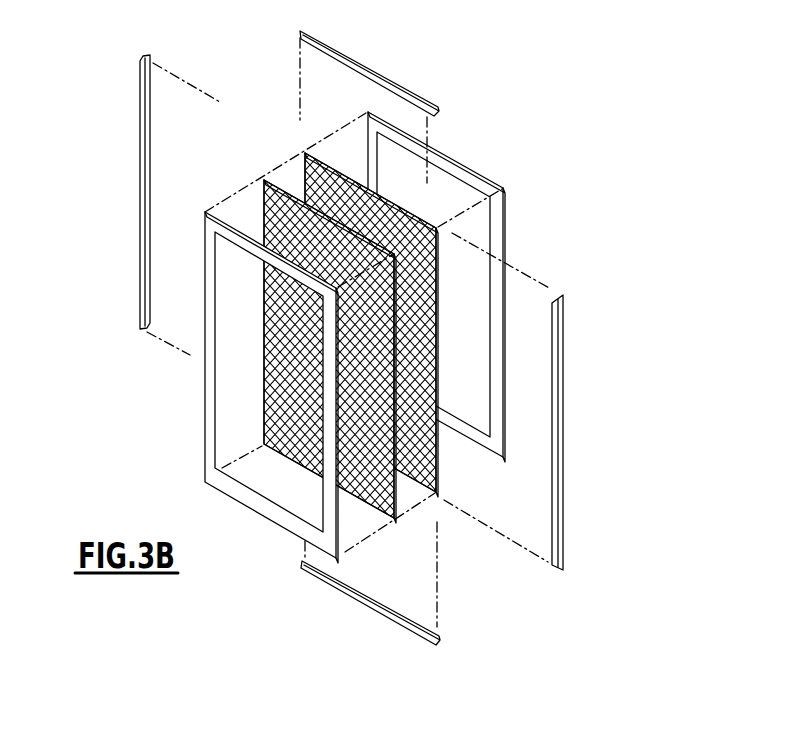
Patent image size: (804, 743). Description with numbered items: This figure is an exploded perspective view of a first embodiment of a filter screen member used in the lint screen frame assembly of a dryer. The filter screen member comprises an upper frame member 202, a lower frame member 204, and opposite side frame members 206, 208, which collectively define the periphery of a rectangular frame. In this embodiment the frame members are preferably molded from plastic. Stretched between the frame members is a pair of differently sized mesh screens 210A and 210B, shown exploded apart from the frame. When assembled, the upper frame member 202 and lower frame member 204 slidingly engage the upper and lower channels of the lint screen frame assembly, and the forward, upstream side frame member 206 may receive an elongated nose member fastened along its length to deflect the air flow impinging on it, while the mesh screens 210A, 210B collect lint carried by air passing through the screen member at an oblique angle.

The upper frame member 202 is at (372, 74).
The lower frame member 204 is at (387, 611).
The side frame member 206 is at (561, 386).
The side frame member 208 is at (137, 180).
The mesh screen 210A is at (367, 482).
The mesh screen 210B is at (426, 440).